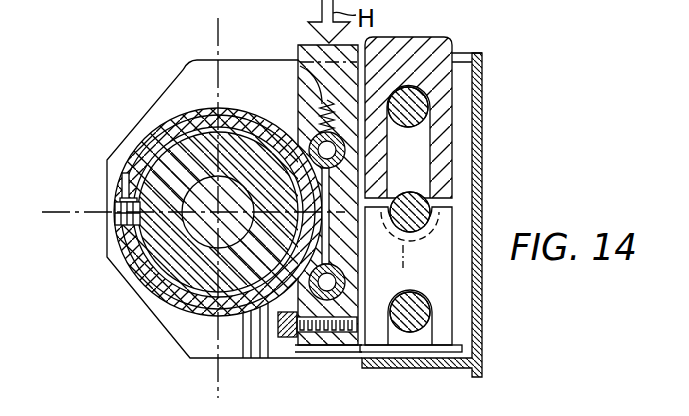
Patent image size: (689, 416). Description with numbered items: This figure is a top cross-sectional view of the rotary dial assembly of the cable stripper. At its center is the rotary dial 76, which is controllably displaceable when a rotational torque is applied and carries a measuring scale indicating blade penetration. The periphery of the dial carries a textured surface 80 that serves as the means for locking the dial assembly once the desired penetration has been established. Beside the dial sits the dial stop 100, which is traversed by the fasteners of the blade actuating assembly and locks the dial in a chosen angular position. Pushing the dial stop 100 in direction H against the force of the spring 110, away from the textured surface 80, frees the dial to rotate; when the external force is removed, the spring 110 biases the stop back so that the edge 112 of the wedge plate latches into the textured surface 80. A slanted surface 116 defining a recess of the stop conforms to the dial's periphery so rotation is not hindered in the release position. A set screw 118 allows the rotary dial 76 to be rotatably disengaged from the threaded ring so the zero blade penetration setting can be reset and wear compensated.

The rotary dial 76 is at (162, 292).
The textured surface 80 is at (232, 109).
The dial stop 100 is at (93, 246).
The spring 110 is at (298, 78).
The edge 112 is at (290, 297).
The slanted surface 116 is at (297, 135).
The set screw 118 is at (127, 173).